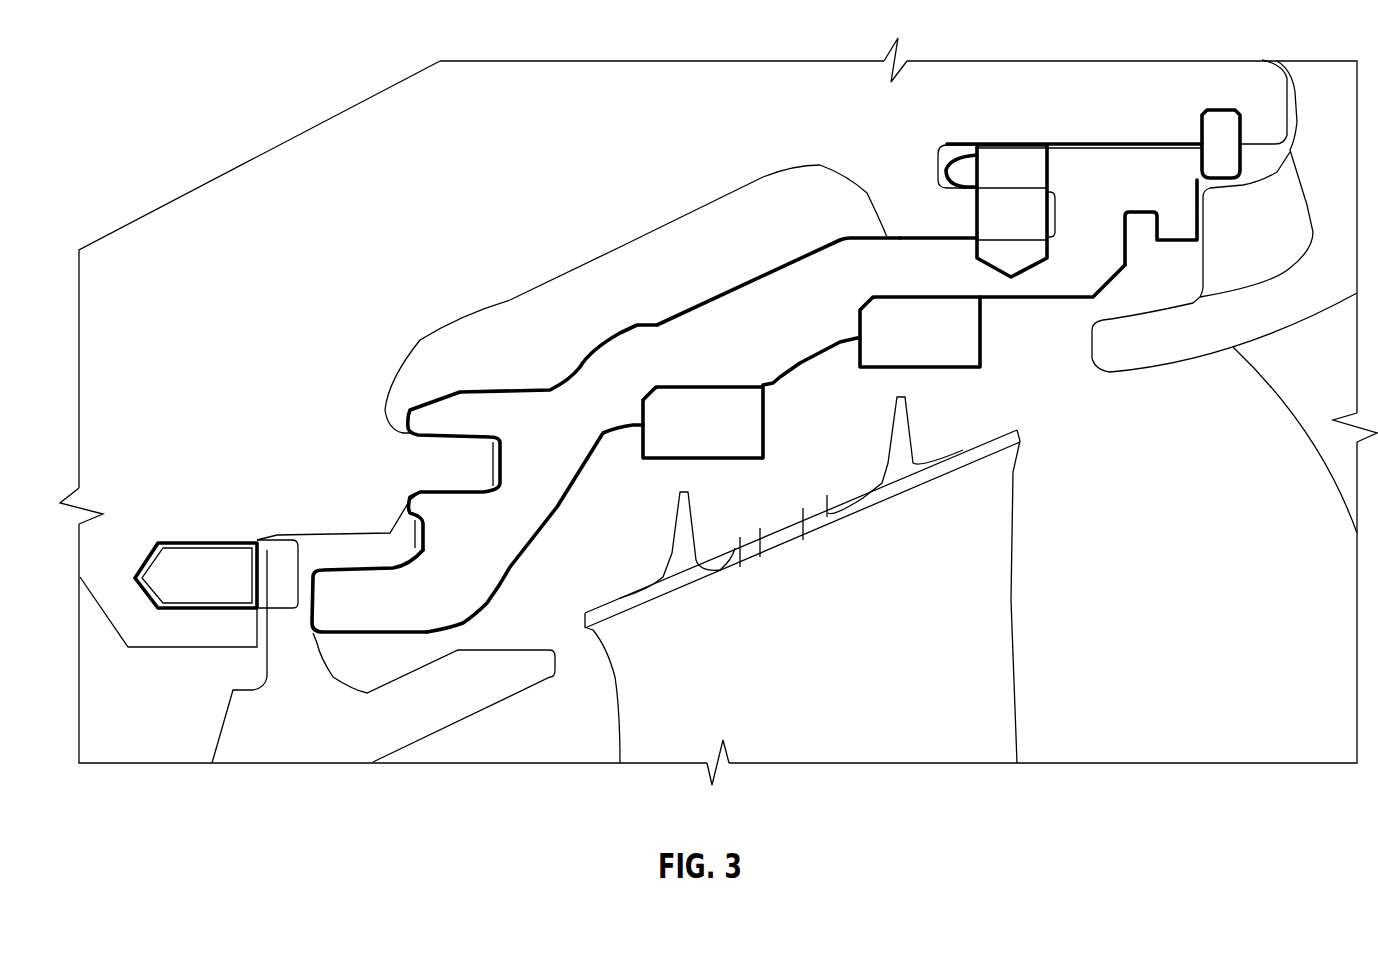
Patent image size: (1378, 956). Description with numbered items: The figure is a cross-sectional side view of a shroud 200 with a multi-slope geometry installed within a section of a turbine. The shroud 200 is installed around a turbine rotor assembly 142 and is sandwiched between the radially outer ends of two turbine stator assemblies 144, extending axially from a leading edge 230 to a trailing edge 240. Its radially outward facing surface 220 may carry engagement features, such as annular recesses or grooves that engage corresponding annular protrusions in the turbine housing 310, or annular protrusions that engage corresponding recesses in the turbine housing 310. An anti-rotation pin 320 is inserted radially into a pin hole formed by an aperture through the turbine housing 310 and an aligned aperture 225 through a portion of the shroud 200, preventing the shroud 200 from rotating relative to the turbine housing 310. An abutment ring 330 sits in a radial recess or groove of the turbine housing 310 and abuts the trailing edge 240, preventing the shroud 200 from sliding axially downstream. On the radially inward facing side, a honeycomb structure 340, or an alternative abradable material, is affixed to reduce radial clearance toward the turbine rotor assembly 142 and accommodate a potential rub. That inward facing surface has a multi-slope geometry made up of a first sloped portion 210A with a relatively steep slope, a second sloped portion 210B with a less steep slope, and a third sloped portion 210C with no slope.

The turbine rotor assembly 142 is at (805, 687).
The turbine stator assemblies 144 is at (318, 730).
The shroud 200 is at (728, 366).
The first sloped portion 210A is at (510, 560).
The second sloped portion 210B is at (797, 366).
The third sloped portion 210C is at (1037, 298).
The radially outward facing surface 220 is at (770, 268).
The aperture 225 is at (975, 248).
The leading edge 230 is at (310, 607).
The trailing edge 240 is at (1193, 197).
The turbine housing 310 is at (448, 275).
The anti-rotation pin 320 is at (995, 213).
The abutment ring 330 is at (1228, 135).
The honeycomb structure 340 is at (913, 330).